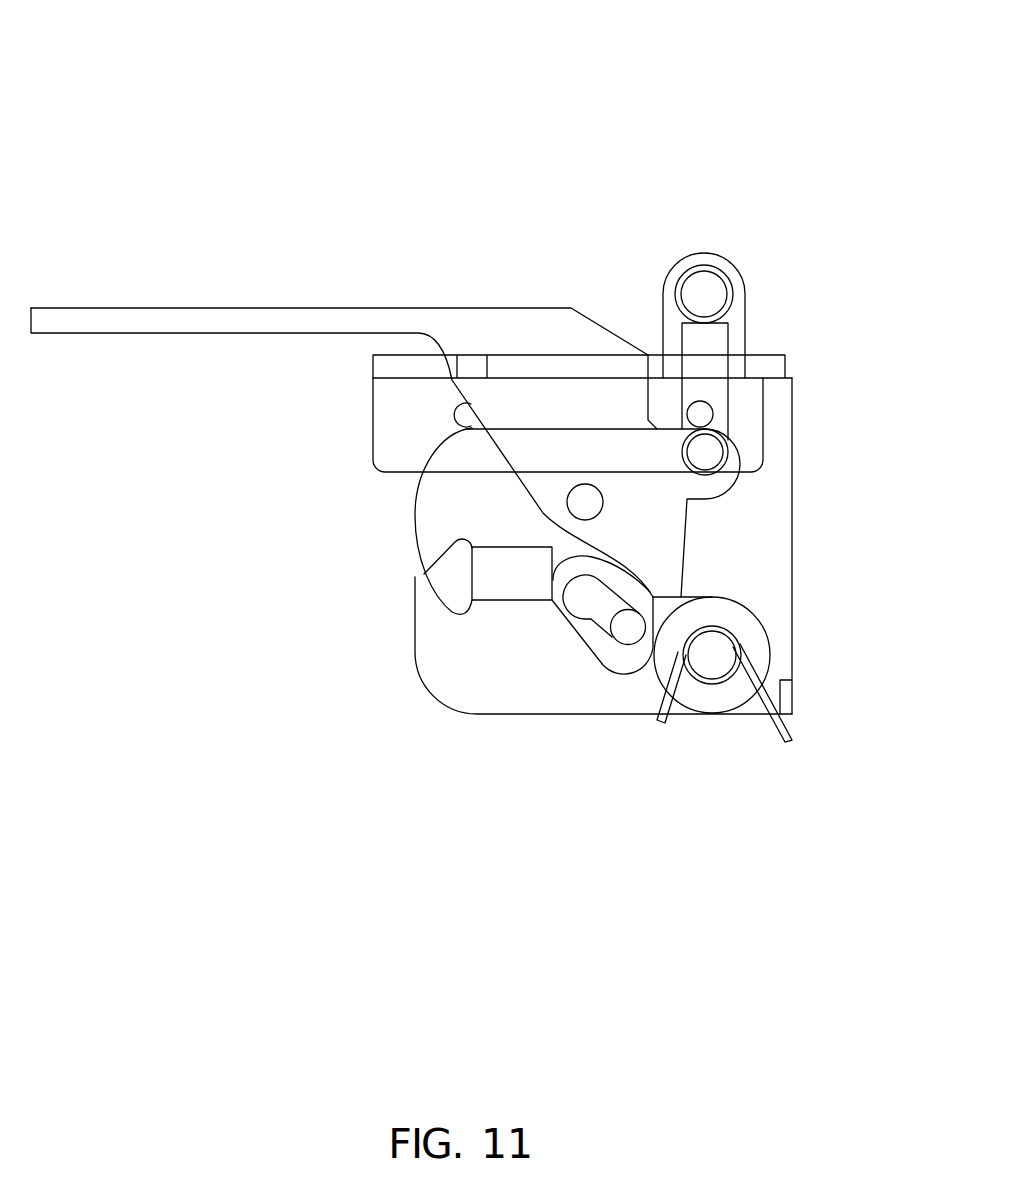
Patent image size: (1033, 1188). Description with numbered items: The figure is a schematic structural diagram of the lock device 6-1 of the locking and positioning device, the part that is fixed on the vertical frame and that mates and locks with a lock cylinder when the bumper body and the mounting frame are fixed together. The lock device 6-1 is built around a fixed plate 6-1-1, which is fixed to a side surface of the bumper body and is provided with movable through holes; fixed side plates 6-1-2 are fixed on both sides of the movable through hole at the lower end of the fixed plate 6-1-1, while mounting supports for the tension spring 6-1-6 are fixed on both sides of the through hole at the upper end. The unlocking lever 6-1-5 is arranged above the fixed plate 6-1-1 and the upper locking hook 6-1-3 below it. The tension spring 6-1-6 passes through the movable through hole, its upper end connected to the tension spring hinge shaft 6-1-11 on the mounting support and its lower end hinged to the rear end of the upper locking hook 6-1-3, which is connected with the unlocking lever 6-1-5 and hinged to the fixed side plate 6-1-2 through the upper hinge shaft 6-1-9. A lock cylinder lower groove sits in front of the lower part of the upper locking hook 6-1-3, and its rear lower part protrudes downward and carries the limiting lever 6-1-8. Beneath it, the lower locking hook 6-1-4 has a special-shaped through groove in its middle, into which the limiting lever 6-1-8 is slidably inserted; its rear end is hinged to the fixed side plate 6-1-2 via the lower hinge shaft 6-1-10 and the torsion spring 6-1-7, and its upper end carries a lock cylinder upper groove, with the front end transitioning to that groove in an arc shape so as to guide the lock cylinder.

The lock device 6-1 is at (495, 108).
The fixed plate 6-1-1 is at (567, 360).
The fixed side plate 6-1-2 is at (875, 509).
The upper locking hook 6-1-3 is at (442, 506).
The lower locking hook 6-1-4 is at (457, 660).
The unlocking lever 6-1-5 is at (330, 310).
The tension spring 6-1-6 is at (728, 340).
The torsion spring 6-1-7 is at (765, 700).
The limiting lever 6-1-8 is at (624, 627).
The upper hinge shaft 6-1-9 is at (585, 502).
The lower hinge shaft 6-1-10 is at (712, 655).
The tension spring hinge shaft 6-1-11 is at (705, 294).